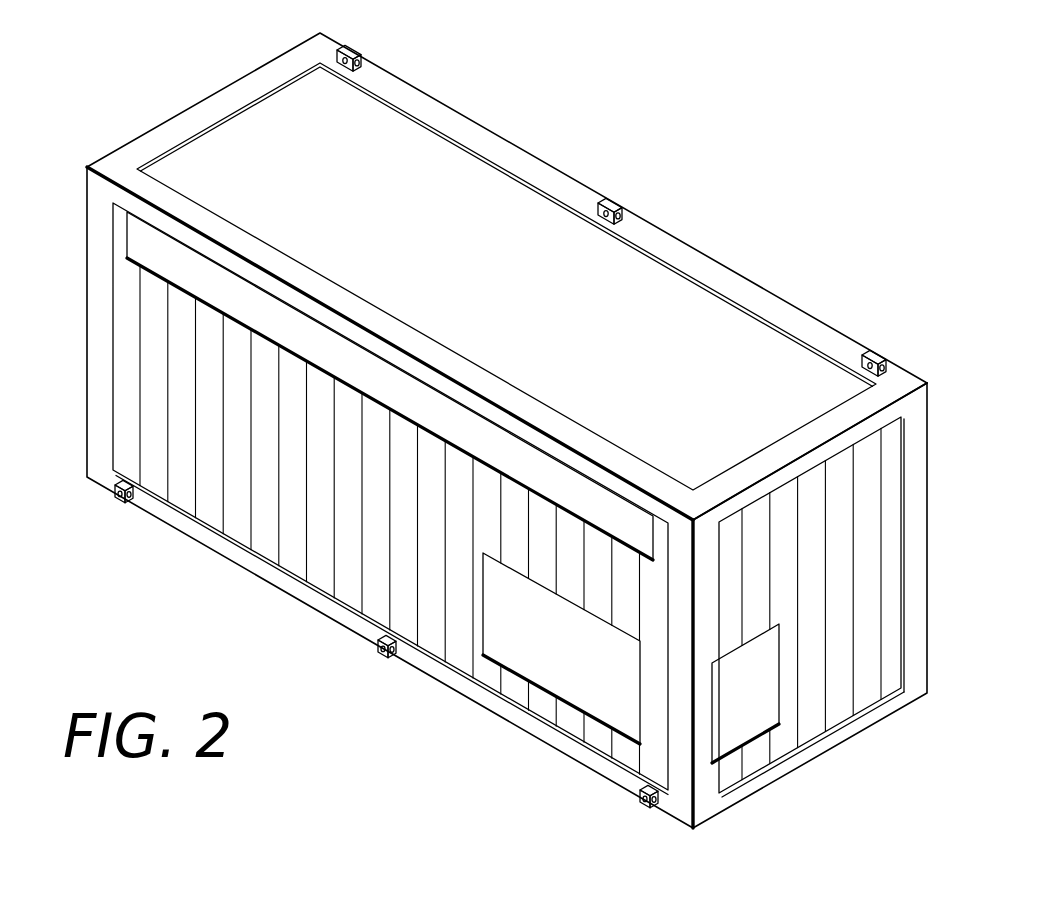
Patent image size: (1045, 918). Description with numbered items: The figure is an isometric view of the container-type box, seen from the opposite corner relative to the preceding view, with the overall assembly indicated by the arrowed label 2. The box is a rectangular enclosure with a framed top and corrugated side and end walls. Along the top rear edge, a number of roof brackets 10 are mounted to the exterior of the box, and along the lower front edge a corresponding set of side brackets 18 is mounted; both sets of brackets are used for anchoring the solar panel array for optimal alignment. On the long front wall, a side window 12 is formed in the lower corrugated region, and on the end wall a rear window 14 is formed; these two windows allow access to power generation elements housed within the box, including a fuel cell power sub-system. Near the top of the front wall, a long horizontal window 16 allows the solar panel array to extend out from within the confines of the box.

The container 2 is at (964, 124).
The roof bracket 10 is at (360, 53).
The side window 12 is at (562, 657).
The rear window 14 is at (758, 707).
The window 16 is at (403, 397).
The side bracket 18 is at (114, 491).